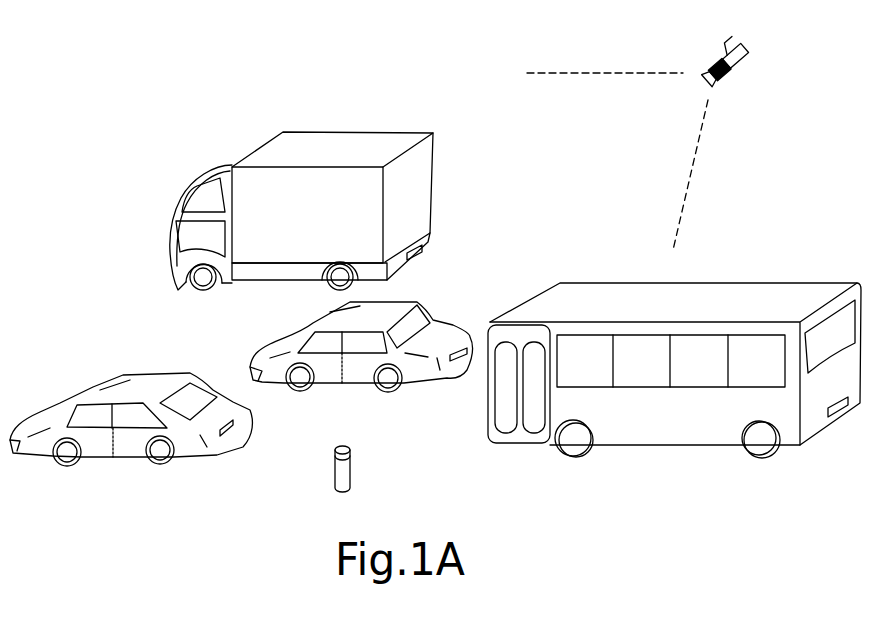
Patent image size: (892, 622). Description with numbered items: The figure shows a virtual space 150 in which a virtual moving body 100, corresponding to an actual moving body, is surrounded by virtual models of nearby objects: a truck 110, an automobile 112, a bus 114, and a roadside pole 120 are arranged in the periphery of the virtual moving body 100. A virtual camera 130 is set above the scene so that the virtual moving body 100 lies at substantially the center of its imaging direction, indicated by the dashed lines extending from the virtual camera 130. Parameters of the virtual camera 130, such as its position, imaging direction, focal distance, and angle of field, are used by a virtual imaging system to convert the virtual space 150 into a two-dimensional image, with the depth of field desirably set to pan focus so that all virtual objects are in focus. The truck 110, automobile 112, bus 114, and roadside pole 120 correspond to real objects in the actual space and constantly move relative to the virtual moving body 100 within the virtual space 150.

The virtual moving body 100 is at (400, 297).
The truck 110 is at (390, 132).
The automobile 112 is at (157, 372).
The bus 114 is at (753, 282).
The roadside pole 120 is at (342, 445).
The virtual camera 130 is at (747, 37).
The virtual space 150 is at (263, 104).